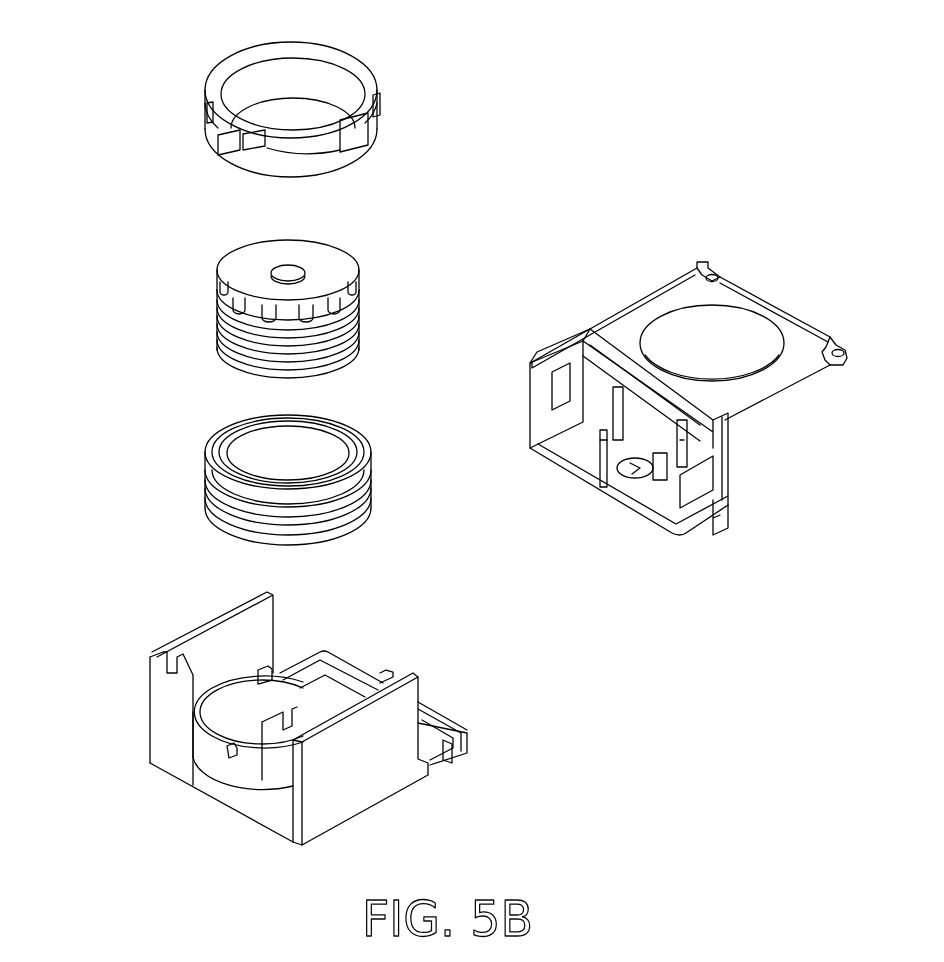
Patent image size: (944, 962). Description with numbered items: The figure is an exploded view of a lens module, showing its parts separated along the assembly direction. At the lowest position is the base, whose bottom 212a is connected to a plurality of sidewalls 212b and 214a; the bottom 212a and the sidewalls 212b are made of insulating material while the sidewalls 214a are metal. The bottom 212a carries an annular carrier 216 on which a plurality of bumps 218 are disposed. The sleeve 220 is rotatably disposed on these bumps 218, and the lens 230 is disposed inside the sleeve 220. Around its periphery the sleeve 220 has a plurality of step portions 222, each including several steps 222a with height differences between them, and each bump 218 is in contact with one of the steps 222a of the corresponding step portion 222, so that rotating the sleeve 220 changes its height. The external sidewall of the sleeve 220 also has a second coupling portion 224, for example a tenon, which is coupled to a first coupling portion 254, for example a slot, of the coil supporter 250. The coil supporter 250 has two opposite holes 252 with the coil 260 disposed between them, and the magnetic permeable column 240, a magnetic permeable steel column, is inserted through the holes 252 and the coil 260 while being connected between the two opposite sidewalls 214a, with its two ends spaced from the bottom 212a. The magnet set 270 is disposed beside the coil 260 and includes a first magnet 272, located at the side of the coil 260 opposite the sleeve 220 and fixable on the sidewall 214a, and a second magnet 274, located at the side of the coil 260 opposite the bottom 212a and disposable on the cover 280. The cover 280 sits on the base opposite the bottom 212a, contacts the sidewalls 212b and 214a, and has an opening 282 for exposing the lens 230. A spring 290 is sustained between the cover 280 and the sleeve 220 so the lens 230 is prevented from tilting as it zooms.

The bottom 212a is at (193, 747).
The sidewalls 212b is at (367, 773).
The sidewalls 214a is at (708, 533).
The annular carrier 216 is at (238, 778).
The bumps 218 is at (227, 752).
The sleeve 220 is at (360, 128).
The step portions 222 is at (376, 143).
The steps 222a is at (243, 143).
The second coupling portion 224 is at (378, 88).
The lens 230 is at (332, 276).
The magnetic permeable column 240 is at (590, 392).
The coil supporter 250 is at (582, 442).
The holes 252 is at (598, 422).
The first coupling portion 254 is at (661, 466).
The coil 260 is at (638, 417).
The magnet set 270 is at (776, 464).
The first magnet 272 is at (677, 500).
The second magnet 274 is at (683, 427).
The cover 280 is at (793, 338).
The opening 282 is at (750, 345).
The spring 290 is at (372, 460).